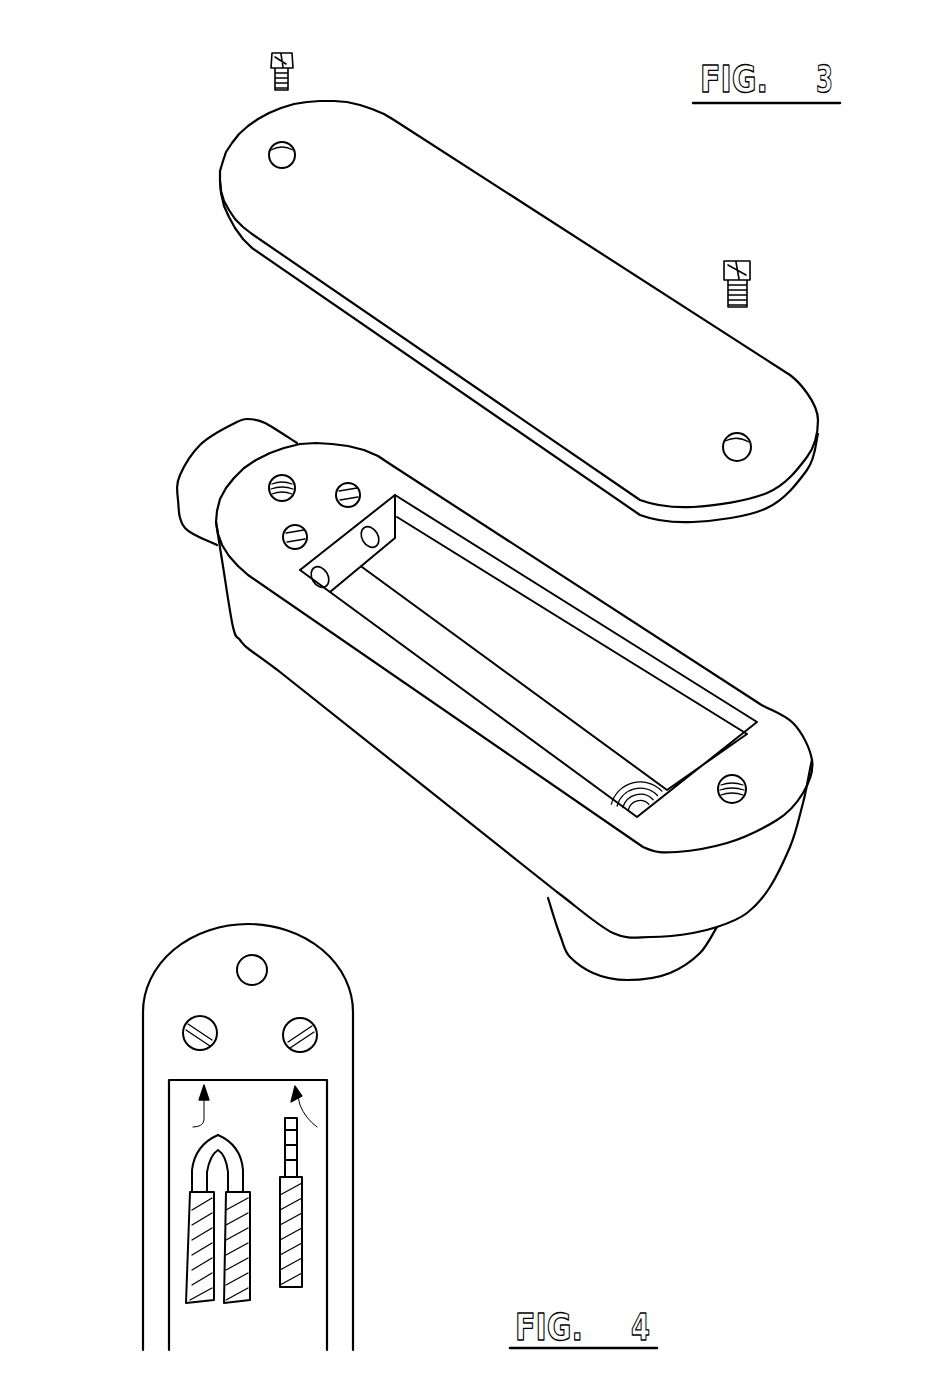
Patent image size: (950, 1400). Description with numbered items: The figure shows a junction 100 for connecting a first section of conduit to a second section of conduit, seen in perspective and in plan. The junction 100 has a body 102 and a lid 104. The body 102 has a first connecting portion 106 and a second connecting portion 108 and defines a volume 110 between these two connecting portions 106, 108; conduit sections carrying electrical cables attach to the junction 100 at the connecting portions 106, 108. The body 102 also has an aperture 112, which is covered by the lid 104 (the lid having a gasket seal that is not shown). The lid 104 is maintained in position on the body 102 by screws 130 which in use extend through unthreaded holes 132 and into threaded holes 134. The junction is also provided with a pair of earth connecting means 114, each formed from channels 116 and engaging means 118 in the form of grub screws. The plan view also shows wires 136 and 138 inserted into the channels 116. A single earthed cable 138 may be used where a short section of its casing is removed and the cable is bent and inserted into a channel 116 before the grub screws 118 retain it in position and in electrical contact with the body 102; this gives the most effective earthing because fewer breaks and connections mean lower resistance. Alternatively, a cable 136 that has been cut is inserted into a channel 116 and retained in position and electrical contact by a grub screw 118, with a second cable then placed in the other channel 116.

In FIG. 3, the junction 100 is at (477, 712).
In FIG. 4, the junction 100 is at (265, 1095).
In FIG. 3, the body 102 is at (737, 880).
In FIG. 4, the body 102 is at (308, 982).
In FIG. 3, the lid 104 is at (527, 285).
In FIG. 3, the first connecting portion 106 is at (217, 463).
In FIG. 3, the second connecting portion 108 is at (647, 957).
In FIG. 3, the volume 110 is at (599, 696).
In FIG. 3, the aperture 112 is at (440, 680).
In FIG. 4, the aperture 112 is at (326, 1324).
In FIG. 3, the earth connecting means 114 is at (383, 564).
In FIG. 3, the channels 116 is at (320, 580).
In FIG. 4, the channels 116 is at (193, 1127).
In FIG. 3, the engaging means 118 is at (298, 527).
In FIG. 4, the engaging means 118 is at (192, 1025).
In FIG. 3, the screws 130 is at (274, 57).
In FIG. 3, the unthreaded holes 132 is at (274, 148).
In FIG. 3, the threaded holes 134 is at (276, 480).
In FIG. 4, the threaded holes 134 is at (250, 965).
In FIG. 4, the wire 136 is at (302, 1238).
In FIG. 4, the wire 138 is at (192, 1253).